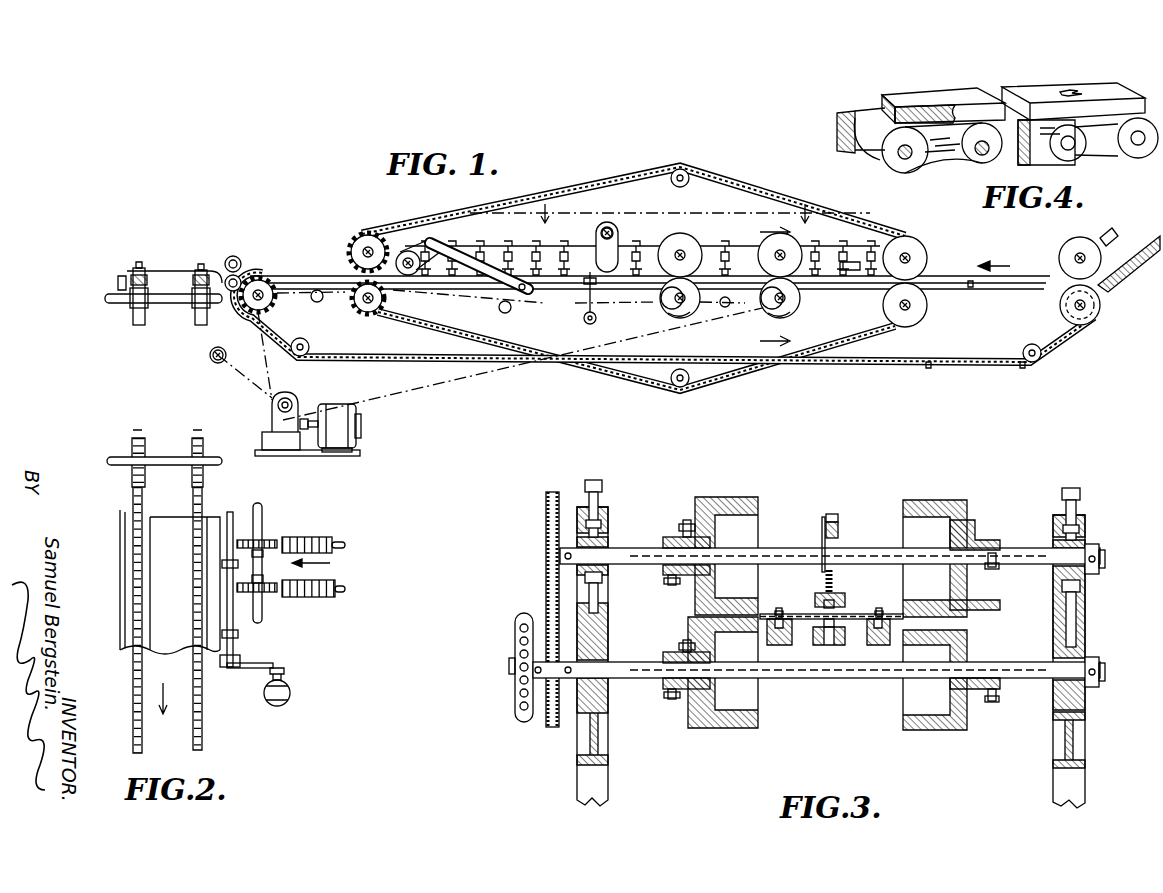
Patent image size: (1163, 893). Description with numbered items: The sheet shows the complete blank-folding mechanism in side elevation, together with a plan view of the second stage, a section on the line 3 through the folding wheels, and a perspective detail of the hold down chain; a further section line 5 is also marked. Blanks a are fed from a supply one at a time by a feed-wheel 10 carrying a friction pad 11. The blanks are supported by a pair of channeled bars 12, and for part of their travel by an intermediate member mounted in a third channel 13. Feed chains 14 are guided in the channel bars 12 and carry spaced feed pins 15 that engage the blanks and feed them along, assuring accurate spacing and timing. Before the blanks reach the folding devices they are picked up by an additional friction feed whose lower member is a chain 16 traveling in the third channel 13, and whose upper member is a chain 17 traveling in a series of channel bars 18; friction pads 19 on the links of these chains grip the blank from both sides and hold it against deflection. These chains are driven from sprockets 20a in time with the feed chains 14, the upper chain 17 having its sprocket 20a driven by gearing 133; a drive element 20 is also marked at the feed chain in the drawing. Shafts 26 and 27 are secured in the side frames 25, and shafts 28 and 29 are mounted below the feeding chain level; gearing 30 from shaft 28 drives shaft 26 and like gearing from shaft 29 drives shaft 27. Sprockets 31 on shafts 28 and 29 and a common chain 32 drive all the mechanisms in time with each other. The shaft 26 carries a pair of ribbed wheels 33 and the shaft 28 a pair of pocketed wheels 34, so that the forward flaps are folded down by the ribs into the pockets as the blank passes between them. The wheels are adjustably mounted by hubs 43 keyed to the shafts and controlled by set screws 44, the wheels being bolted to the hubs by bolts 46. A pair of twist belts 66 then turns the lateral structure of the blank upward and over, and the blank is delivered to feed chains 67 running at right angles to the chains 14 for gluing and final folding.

In FIG. 1, the feed-wheel 10 is at (1062, 254).
In FIG. 1, the friction pad 11 is at (1106, 238).
In FIG. 1, the blank a is at (1136, 248).
In FIG. 1, the channeled bars 12 is at (984, 292).
In FIG. 3, the channeled bars 12 is at (792, 642).
In FIG. 3, the third channel 13 is at (826, 645).
In FIG. 1, the feed chains 14 is at (1022, 366).
In FIG. 2, the feed chains 14 is at (337, 538).
In FIG. 3, the feed chains 14 is at (800, 590).
In FIG. 1, the feed pins 15 is at (970, 288).
In FIG. 3, the feed pins 15 is at (778, 606).
In FIG. 1, the chain 16 is at (236, 292).
In FIG. 4, the chain 16 is at (1134, 152).
In FIG. 2, the chain 16 is at (263, 508).
In FIG. 3, the chain 16 is at (836, 645).
In FIG. 1, the chain 17 is at (738, 178).
In FIG. 3, the chain 17 is at (818, 598).
In FIG. 1, the channel bars 18 is at (882, 240).
In FIG. 3, the channel bars 18 is at (846, 595).
In FIG. 4, the friction pads 19 is at (1122, 90).
In FIG. 1, the pusher 20 is at (850, 262).
In FIG. 3, the pusher 20 is at (836, 514).
In FIG. 1, the sprockets 20a is at (368, 248).
In FIG. 3, the side frames 25 is at (610, 512).
In FIG. 1, the shaft 26 is at (770, 252).
In FIG. 3, the shaft 26 is at (1026, 550).
In FIG. 1, the shaft 27 is at (686, 233).
In FIG. 1, the shaft 28 is at (788, 312).
In FIG. 3, the shaft 28 is at (1024, 680).
In FIG. 1, the shaft 29 is at (672, 308).
In FIG. 3, the gearing 30 is at (545, 612).
In FIG. 1, the sprockets 31 is at (662, 304).
In FIG. 3, the sprockets 31 is at (512, 638).
In FIG. 1, the chain 32 is at (450, 376).
In FIG. 3, the ribbed wheels 33 is at (730, 500).
In FIG. 3, the pocketed wheels 34 is at (690, 728).
In FIG. 3, the hubs 43 is at (666, 536).
In FIG. 3, the set screws 44 is at (663, 585).
In FIG. 3, the bolts 46 is at (980, 526).
In FIG. 1, the twist belts 66 is at (486, 248).
In FIG. 1, the feed chains 67 is at (186, 318).
In FIG. 2, the feed chains 67 is at (186, 520).
In FIG. 1, the gearing 133 is at (345, 258).
In FIG. 1, the section line 3 is at (768, 286).
In FIG. 1, the section line 5- 5 is at (670, 215).